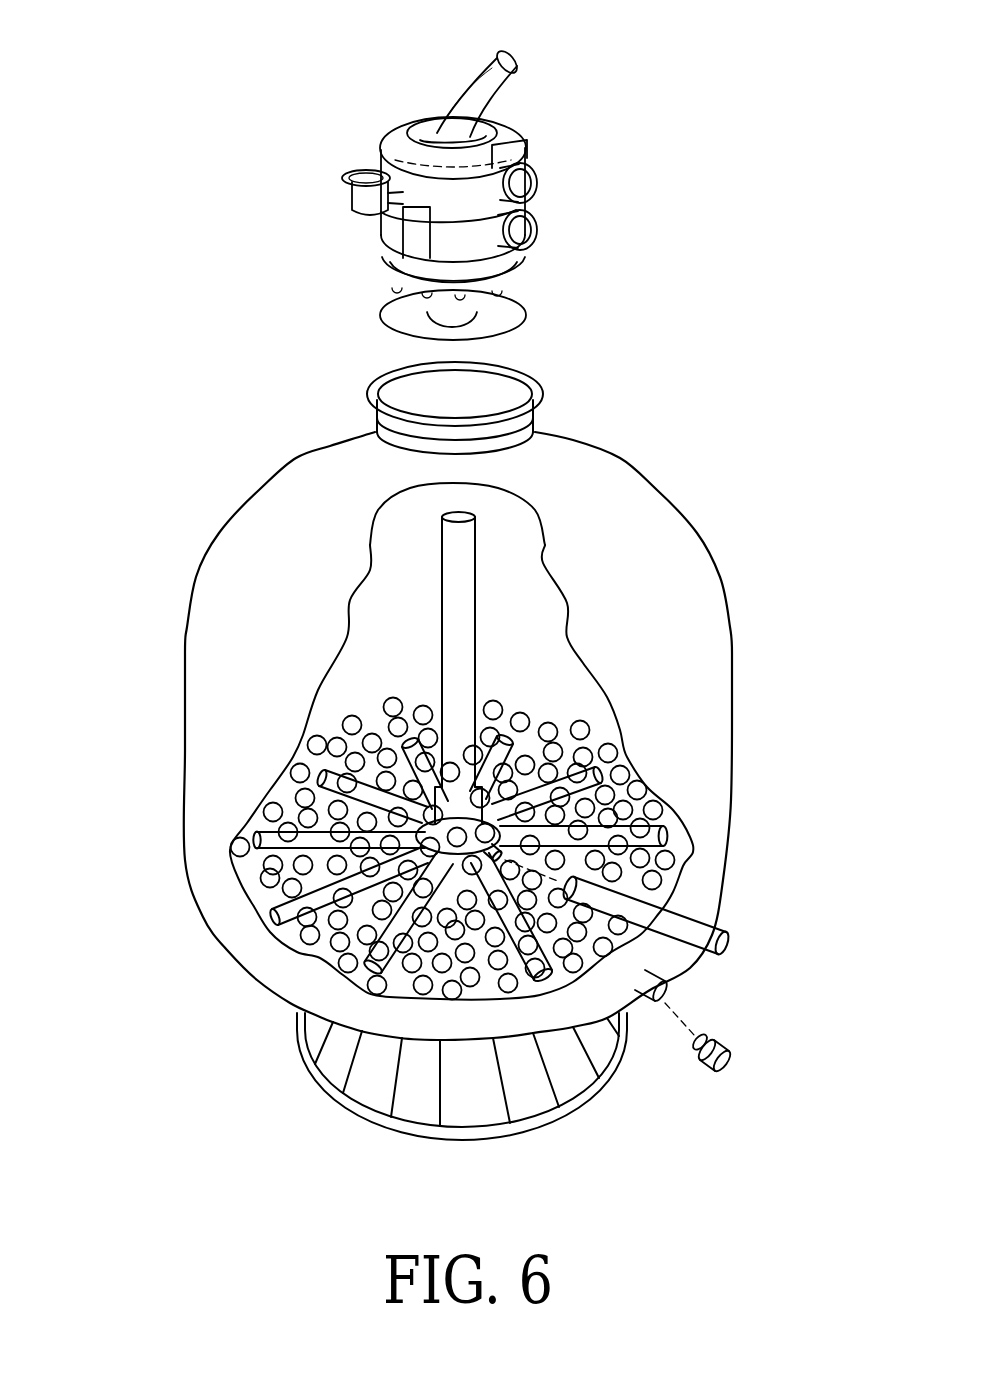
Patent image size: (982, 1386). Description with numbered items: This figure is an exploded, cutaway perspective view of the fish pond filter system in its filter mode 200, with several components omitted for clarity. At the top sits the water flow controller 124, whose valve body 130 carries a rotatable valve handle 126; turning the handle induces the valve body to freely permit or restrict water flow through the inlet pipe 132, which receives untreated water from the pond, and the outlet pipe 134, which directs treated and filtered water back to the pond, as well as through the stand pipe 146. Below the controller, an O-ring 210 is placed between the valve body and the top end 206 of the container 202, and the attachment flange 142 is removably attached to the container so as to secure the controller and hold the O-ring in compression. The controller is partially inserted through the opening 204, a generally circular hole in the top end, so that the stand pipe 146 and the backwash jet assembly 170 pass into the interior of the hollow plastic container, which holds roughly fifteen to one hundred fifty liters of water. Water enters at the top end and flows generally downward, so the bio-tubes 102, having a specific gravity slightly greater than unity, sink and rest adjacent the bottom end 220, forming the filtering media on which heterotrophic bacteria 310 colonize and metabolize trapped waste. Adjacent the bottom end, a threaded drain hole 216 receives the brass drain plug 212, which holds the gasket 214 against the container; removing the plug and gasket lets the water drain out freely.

The filter mode 200 is at (270, 130).
The water flow controller 124 is at (377, 113).
The valve handle 126 is at (500, 62).
The valve body 130 is at (387, 237).
The inlet pipe 132 is at (543, 173).
The outlet pipe 134 is at (538, 230).
The O-ring 210 is at (527, 315).
The top end 206 is at (328, 398).
The attachment flange 142 is at (536, 384).
The opening 204 is at (510, 430).
The container 202 is at (207, 538).
The backwash jet assembly 170 is at (258, 716).
The stand pipe 146 is at (466, 600).
The bio-tubes 102 is at (298, 742).
The heterotrophic bacteria 310 is at (590, 752).
The drain hole 216 is at (668, 982).
The gasket 214 is at (710, 1037).
The drain plug 212 is at (735, 1072).
The bottom end 220 is at (262, 1067).